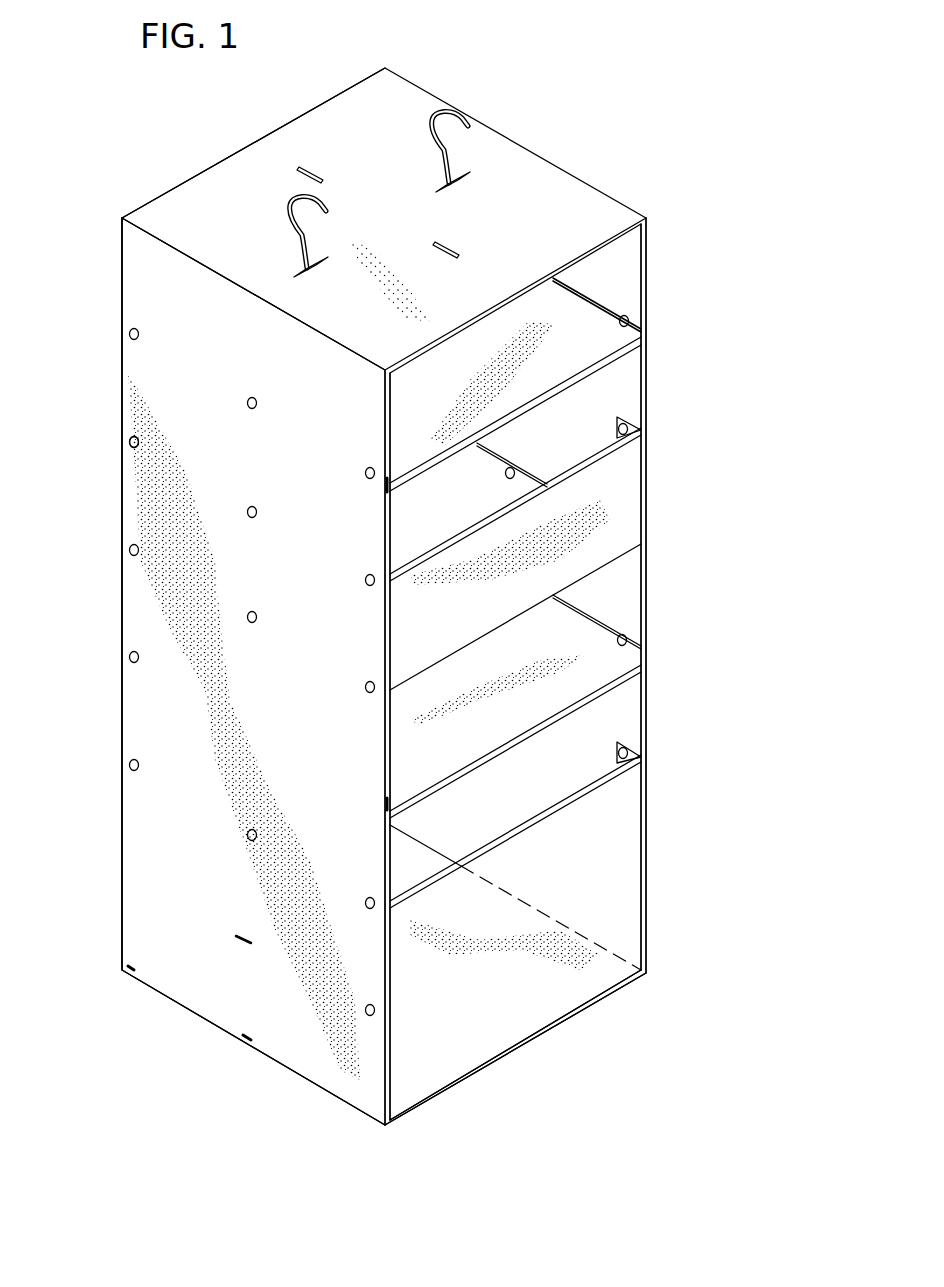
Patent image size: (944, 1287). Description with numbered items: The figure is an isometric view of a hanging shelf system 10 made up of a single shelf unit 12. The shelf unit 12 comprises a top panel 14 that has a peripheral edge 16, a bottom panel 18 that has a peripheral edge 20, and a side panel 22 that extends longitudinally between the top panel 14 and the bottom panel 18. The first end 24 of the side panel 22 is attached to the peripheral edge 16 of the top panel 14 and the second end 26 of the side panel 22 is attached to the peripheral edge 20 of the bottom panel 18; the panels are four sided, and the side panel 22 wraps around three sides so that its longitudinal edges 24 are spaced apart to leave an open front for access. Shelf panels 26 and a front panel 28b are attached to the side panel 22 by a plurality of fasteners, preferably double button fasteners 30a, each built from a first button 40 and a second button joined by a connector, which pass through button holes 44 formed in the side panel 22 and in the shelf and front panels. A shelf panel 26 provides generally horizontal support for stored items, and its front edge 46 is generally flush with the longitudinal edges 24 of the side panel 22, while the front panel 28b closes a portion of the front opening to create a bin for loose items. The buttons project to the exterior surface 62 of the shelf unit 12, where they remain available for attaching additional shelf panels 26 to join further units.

The hanging shelf system 10 is at (504, 52).
The shelf unit 12 is at (522, 138).
The top panel 14 is at (588, 202).
The peripheral edge 16 is at (318, 108).
The bottom panel 18 is at (483, 1020).
The peripheral edge 20 is at (582, 938).
The side panel 22 is at (133, 358).
The first end 24 is at (135, 248).
The shelf panel 26 is at (609, 376).
The front panel 28b is at (630, 498).
The double button fastener 30a is at (628, 326).
The first button 40 is at (128, 438).
The button holes 44 is at (128, 878).
The front edge 46 is at (386, 482).
The exterior surface 62 is at (300, 703).